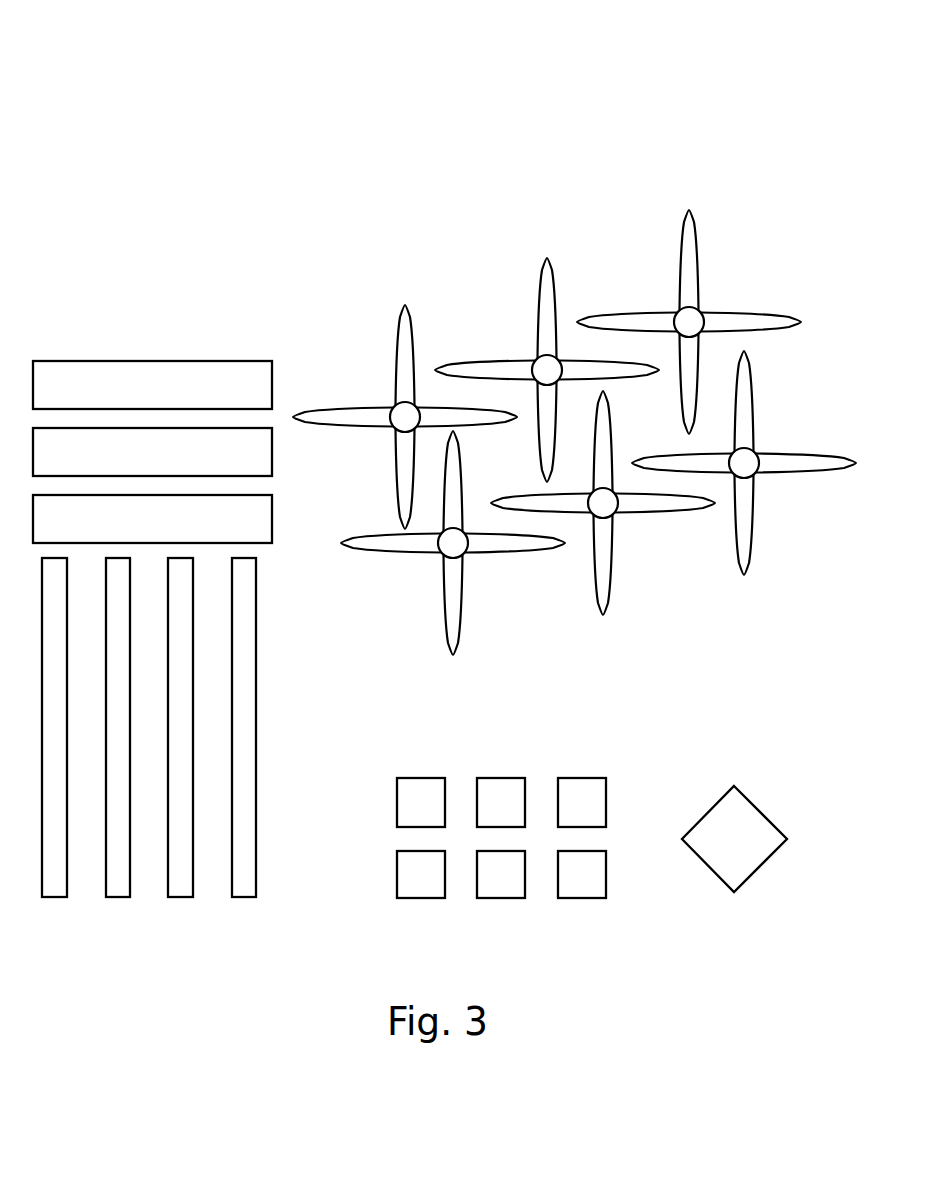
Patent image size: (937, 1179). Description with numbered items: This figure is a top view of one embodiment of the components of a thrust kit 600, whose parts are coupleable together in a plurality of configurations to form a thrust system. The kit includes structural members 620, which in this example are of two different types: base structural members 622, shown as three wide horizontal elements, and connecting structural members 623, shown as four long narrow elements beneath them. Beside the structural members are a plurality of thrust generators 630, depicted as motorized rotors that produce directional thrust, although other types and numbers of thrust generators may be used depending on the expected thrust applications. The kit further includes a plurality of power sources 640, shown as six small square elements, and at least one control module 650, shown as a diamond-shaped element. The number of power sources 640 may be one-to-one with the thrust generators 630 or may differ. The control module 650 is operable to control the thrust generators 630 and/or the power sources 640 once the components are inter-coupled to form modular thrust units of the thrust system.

The thrust kit 600 is at (114, 70).
The structural members 620 is at (216, 312).
The base structural members 622 is at (50, 511).
The connecting structural members 623 is at (55, 893).
The thrust generators 630 is at (756, 228).
The power sources 640 is at (612, 736).
The control module 650 is at (757, 750).